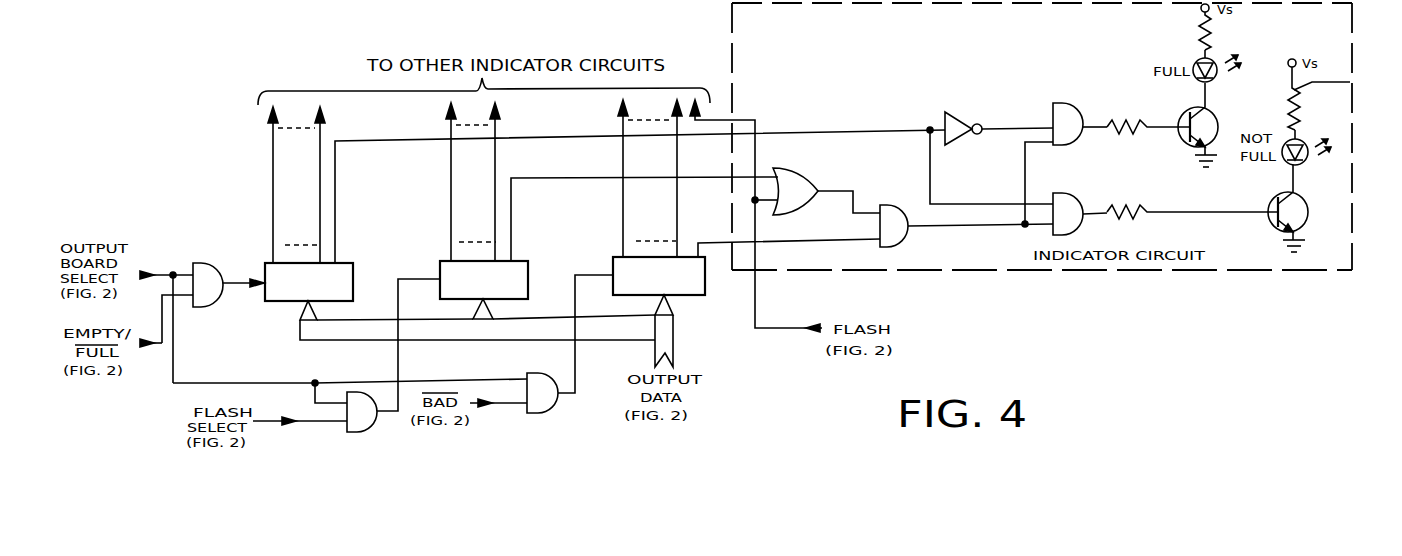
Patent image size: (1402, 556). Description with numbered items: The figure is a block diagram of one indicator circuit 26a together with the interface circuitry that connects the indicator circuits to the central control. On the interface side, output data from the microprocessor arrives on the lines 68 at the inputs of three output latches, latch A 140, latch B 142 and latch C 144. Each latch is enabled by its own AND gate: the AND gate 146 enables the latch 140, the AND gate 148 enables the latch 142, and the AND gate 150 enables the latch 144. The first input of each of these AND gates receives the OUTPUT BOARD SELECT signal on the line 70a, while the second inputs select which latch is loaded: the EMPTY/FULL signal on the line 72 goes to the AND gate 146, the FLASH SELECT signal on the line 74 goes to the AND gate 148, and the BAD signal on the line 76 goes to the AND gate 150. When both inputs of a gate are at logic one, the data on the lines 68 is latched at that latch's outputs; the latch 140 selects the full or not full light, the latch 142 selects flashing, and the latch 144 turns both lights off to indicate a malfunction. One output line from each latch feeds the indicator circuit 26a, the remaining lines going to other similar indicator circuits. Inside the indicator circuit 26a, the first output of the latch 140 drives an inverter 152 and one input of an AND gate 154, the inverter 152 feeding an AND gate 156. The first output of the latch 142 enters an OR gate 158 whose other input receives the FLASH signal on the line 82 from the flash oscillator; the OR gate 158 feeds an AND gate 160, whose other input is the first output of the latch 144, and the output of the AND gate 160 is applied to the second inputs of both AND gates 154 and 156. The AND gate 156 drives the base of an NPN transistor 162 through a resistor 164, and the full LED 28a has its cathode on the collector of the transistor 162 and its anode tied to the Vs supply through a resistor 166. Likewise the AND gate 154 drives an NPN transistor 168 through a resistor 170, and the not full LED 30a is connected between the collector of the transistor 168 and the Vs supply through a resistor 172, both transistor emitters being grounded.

The line 70a is at (173, 273).
The line 72 is at (162, 344).
The AND gate 146 is at (212, 293).
The line 74 is at (322, 422).
The AND gate 148 is at (362, 425).
The line 76 is at (508, 404).
The AND gate 150 is at (546, 406).
The latch A 140 is at (353, 273).
The latch B 142 is at (528, 272).
The latch C 144 is at (705, 290).
The lines 68 is at (676, 330).
The line 82 is at (775, 330).
The OR gate 158 is at (798, 198).
The AND gate 160 is at (895, 240).
The inverter 152 is at (975, 108).
The AND gate 156 is at (1078, 96).
The AND gate 154 is at (1072, 196).
The resistor 164 is at (1112, 133).
The resistor 170 is at (1138, 201).
The NPN transistor 162 is at (1213, 112).
The NPN transistor 168 is at (1268, 216).
The light emitting diode 28a is at (1193, 79).
The LED 30a is at (1300, 138).
The resistor 166 is at (1213, 38).
The resistor 172 is at (1355, 76).
The indicator circuit 26a is at (1122, 276).